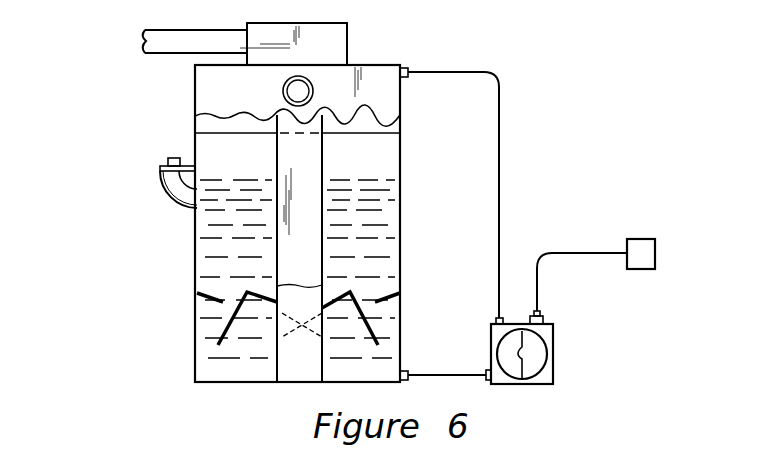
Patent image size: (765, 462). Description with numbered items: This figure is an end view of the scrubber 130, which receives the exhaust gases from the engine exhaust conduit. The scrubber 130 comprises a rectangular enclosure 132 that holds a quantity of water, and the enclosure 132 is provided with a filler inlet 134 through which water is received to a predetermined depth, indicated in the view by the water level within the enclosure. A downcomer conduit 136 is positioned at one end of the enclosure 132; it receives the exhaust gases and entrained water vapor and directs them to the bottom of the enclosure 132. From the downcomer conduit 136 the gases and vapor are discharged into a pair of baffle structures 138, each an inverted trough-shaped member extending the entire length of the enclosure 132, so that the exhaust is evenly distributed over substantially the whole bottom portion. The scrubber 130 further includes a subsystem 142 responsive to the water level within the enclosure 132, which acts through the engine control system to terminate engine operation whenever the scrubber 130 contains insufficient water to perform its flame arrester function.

The scrubber 130 is at (162, 113).
The rectangular enclosure 132 is at (194, 270).
The filler inlet 134 is at (182, 183).
The downcomer conduit 136 is at (316, 159).
The baffle structures 138 is at (230, 325).
The subsystem 142 is at (555, 368).